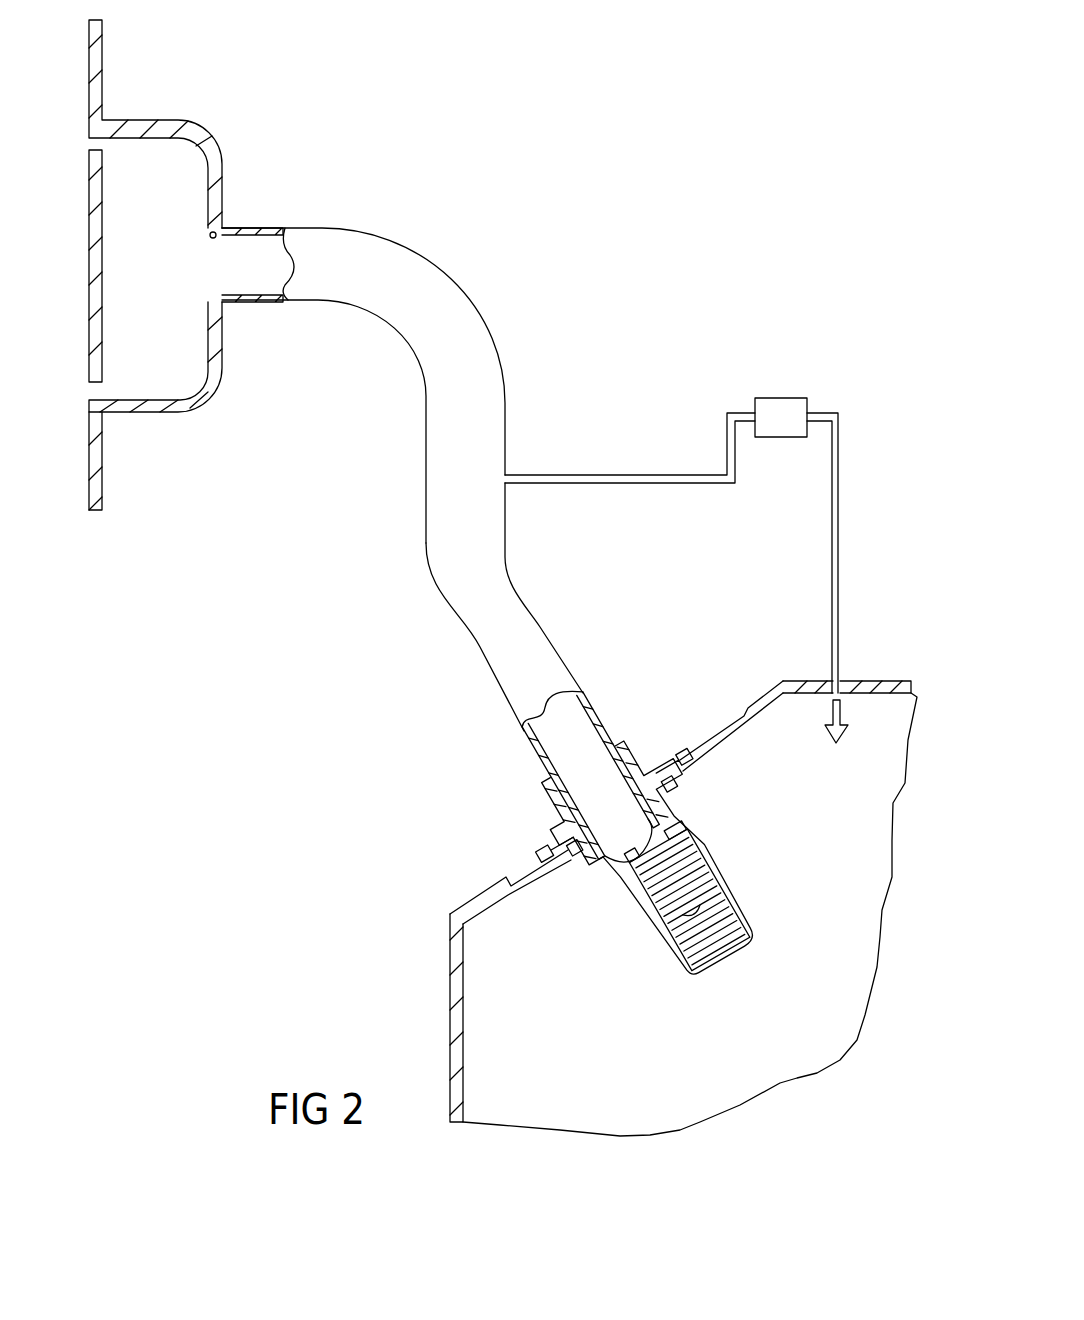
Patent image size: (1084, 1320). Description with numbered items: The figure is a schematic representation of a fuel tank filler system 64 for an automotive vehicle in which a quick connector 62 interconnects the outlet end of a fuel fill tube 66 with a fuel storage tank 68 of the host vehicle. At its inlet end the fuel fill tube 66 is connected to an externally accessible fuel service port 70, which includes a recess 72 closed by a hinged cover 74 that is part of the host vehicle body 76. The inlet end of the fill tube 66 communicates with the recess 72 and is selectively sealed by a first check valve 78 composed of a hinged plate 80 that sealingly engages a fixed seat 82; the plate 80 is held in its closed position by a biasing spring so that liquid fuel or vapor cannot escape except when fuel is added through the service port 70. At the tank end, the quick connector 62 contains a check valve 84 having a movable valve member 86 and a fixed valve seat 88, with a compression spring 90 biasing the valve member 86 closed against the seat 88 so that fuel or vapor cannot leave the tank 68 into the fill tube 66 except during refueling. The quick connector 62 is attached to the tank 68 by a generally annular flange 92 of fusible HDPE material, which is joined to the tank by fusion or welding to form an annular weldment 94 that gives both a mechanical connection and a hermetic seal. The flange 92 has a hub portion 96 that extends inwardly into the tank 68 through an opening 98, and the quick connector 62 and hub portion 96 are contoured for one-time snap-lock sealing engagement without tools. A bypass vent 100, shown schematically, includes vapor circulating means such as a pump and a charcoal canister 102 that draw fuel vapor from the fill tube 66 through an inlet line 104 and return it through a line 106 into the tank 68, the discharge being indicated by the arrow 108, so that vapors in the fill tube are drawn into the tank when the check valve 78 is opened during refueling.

The quick connector 62 is at (662, 708).
The fuel tank filler system 64 is at (500, 302).
The fuel fill tube 66 is at (447, 545).
The fuel storage tank 68 is at (455, 955).
The fuel service port 70 is at (226, 122).
The recess 72 is at (187, 375).
The hinged cover 74 is at (100, 302).
The host vehicle body 76 is at (98, 455).
The first check valve 78 is at (240, 250).
The hinged plate 80 is at (213, 267).
The fixed seat 82 is at (212, 299).
The check valve 84 is at (616, 912).
The movable valve member 86 is at (620, 825).
The fixed valve seat 88 is at (680, 834).
The compression spring 90 is at (705, 893).
The annular flange 92 is at (548, 846).
The annular weldment 94 is at (690, 752).
The hub portion 96 is at (660, 789).
The opening 98 is at (558, 868).
The bypass vent 100 is at (868, 412).
The charcoal canister 102 is at (777, 406).
The inlet line 104 is at (637, 477).
The vent return tube 106 is at (840, 598).
The arrow 108 is at (842, 712).